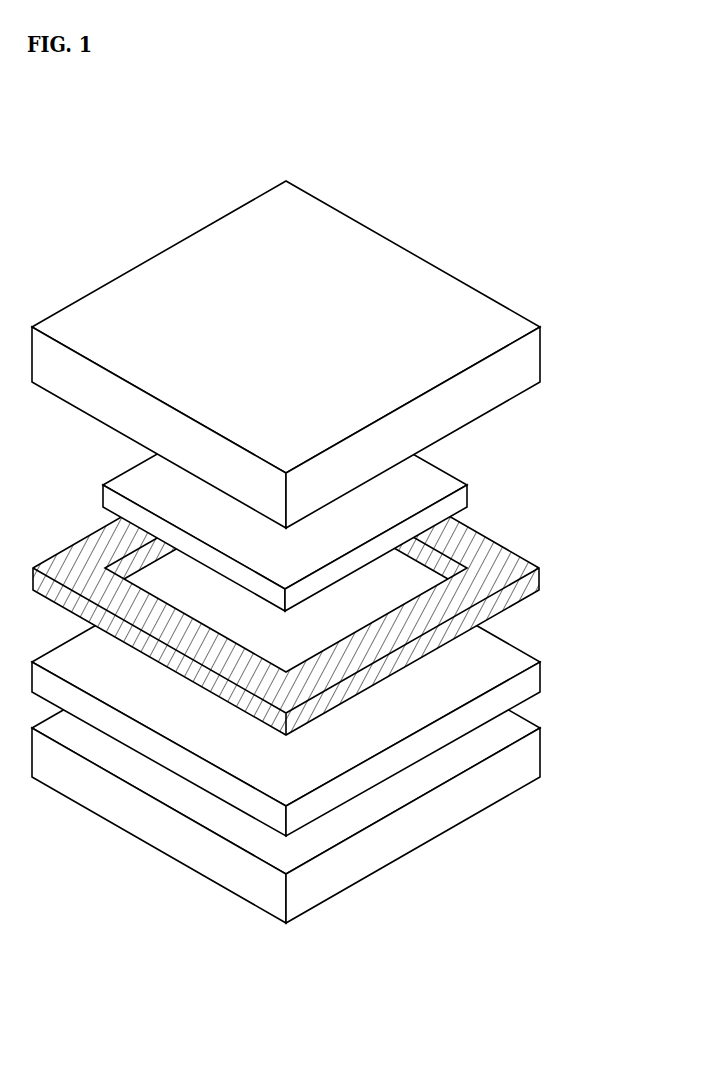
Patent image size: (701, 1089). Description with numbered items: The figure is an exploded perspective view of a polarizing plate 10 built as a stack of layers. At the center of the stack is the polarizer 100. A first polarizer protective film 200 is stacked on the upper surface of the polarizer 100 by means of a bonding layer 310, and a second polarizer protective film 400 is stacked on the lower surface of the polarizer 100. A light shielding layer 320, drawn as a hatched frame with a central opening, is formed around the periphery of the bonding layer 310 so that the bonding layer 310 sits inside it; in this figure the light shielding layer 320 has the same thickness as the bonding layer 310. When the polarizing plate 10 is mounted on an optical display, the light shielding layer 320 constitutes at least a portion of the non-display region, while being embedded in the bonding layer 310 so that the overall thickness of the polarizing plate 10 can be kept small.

The polarizing plate 10 is at (503, 170).
The first polarizer protective film 200 is at (533, 360).
The bonding layer 310 is at (462, 497).
The light shielding layer 320 is at (533, 578).
The polarizer 100 is at (532, 676).
The second polarizer protective film 400 is at (532, 746).